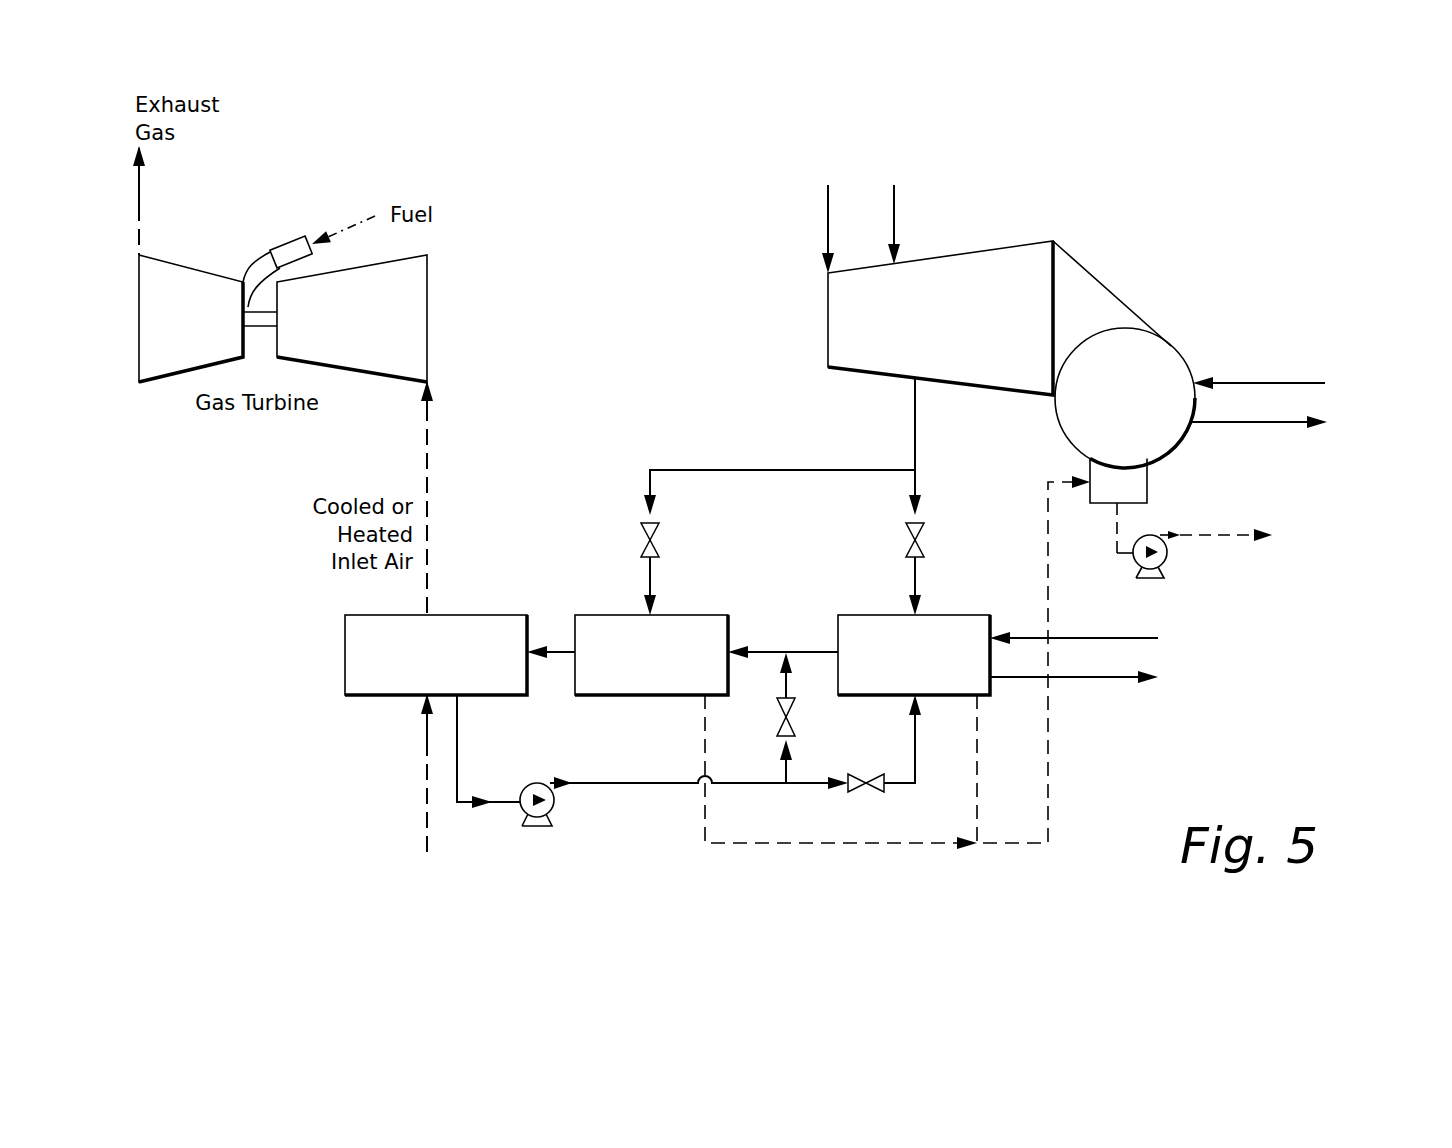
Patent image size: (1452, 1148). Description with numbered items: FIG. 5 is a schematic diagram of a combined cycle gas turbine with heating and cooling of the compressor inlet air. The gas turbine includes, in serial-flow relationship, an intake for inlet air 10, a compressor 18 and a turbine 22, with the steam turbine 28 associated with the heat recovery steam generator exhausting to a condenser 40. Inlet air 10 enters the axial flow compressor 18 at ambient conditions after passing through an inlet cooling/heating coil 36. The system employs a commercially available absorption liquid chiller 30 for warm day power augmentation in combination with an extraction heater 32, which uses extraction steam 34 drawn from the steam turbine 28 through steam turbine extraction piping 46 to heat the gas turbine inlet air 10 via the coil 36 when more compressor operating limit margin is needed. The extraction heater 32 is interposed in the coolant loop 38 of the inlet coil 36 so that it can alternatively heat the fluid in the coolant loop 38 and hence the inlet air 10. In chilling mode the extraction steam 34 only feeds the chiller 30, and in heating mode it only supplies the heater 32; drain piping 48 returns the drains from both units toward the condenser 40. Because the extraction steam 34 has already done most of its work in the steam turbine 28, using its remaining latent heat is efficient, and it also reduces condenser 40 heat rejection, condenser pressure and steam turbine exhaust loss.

The inlet air 10 is at (383, 784).
The compressor 18 is at (428, 290).
The turbine 22 is at (180, 269).
The steam turbine 28 is at (955, 255).
The absorption liquid chiller 30 is at (952, 614).
The extraction heater 32 is at (707, 614).
The extraction steam 34 is at (917, 430).
The inlet cooling/heating coil 36 is at (463, 614).
The coolant loop 38 is at (618, 820).
The condenser 40 is at (1164, 360).
The steam turbine extraction piping 46 is at (735, 472).
The drain piping 48 is at (773, 844).